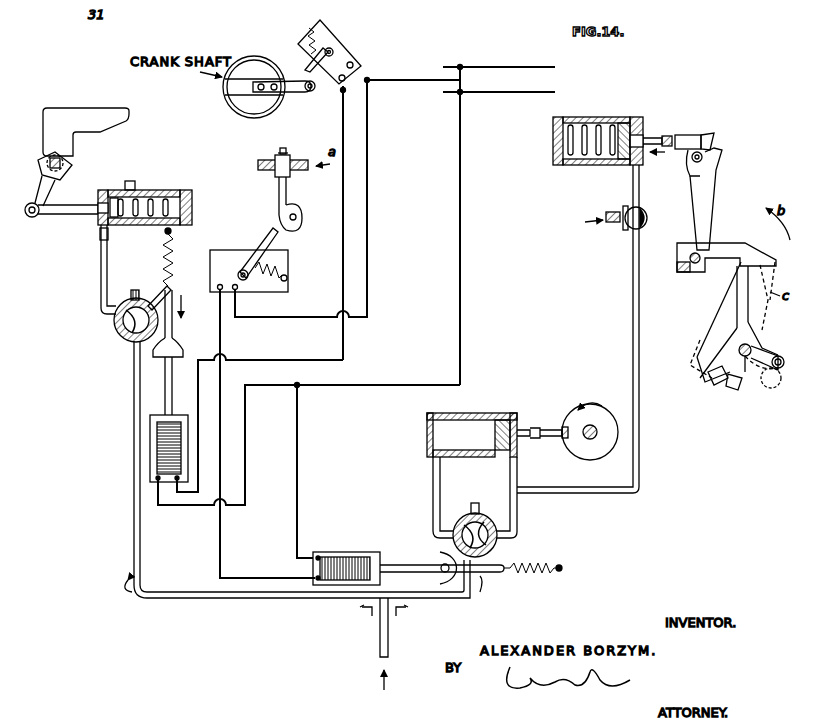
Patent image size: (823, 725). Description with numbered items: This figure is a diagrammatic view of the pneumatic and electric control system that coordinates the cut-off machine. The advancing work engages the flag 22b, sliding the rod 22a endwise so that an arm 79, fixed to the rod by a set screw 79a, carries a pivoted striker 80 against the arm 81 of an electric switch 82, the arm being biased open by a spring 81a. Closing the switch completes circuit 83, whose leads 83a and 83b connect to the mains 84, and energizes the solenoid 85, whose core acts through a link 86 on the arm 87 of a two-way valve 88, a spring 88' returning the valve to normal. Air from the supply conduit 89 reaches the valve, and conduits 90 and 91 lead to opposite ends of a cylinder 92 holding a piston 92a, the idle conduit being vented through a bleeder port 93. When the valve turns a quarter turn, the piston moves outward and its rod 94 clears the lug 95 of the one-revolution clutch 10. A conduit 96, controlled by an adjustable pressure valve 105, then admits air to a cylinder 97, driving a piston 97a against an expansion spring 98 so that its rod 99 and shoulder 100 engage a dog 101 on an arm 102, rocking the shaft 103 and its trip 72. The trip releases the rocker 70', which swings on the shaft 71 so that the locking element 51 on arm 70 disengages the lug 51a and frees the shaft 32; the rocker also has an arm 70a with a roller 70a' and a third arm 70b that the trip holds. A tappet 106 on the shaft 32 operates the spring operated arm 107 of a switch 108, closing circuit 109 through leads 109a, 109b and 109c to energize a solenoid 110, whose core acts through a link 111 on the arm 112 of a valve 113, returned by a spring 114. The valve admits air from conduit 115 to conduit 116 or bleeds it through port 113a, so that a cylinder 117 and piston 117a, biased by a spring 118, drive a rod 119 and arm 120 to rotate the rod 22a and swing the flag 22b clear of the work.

The one-revolution clutch 10 is at (590, 404).
The rod 22a is at (68, 165).
The flag 22b is at (80, 112).
The shaft 32 is at (240, 104).
The locking element 51 is at (708, 386).
The lug 51a is at (724, 390).
The arm of rocker 70 is at (723, 352).
The rocker 70' is at (736, 309).
The rocker arm 70a is at (773, 344).
The roller 70a' is at (774, 386).
The third arm of rocker 70b is at (737, 292).
The shaft 71 is at (746, 372).
The trip 72 is at (731, 248).
The arm 79 is at (287, 185).
The set screw 79a is at (286, 153).
The striker 80 is at (298, 226).
The switch arm 81 is at (270, 230).
The spring 81a is at (288, 275).
The electric switch 82 is at (288, 262).
The electric circuit 83 is at (313, 198).
The leads 83a is at (278, 318).
The lead 83b is at (460, 310).
The mains 84 is at (481, 92).
The solenoid 85 is at (346, 557).
The link 86 is at (494, 580).
The valve arm 87 is at (498, 561).
The two-way valve 88 is at (470, 530).
The spring 88' is at (533, 558).
The air supply conduit 89 is at (380, 640).
The conduit 90 is at (433, 490).
The conduit 91 is at (514, 515).
The cylinder 92 is at (487, 413).
The piston 92a is at (506, 418).
The bleeder port 93 is at (476, 506).
The rod 94 is at (535, 430).
The lug 95 is at (564, 426).
The conduit 96 is at (633, 345).
The cylinder 97 is at (597, 120).
The piston 97a is at (622, 120).
The expansion spring 98 is at (590, 165).
The rod 99 is at (656, 138).
The shoulder 100 is at (714, 137).
The dog 101 is at (692, 170).
The arm 102 is at (717, 192).
The rock shaft 103 is at (688, 250).
The pressure valve 105 is at (628, 230).
The tappet 106 is at (297, 97).
The spring operated switch arm 107 is at (310, 64).
The switch 108 is at (349, 56).
The electric circuit 109 is at (332, 223).
The lead 109a is at (363, 79).
The lead 109b is at (345, 362).
The lead 109c is at (245, 476).
The solenoid 110 is at (150, 452).
The link 111 is at (175, 300).
The crank or arm 112 is at (165, 293).
The valve 113 is at (120, 342).
The bleeder port 113a is at (133, 290).
The spring 114 is at (173, 258).
The conduit 115 is at (134, 540).
The conduit 116 is at (100, 282).
The cylinder 117 is at (160, 190).
The piston 117a is at (116, 190).
The spring 118 is at (154, 226).
The rod 119 is at (64, 215).
The arm 120 is at (37, 188).